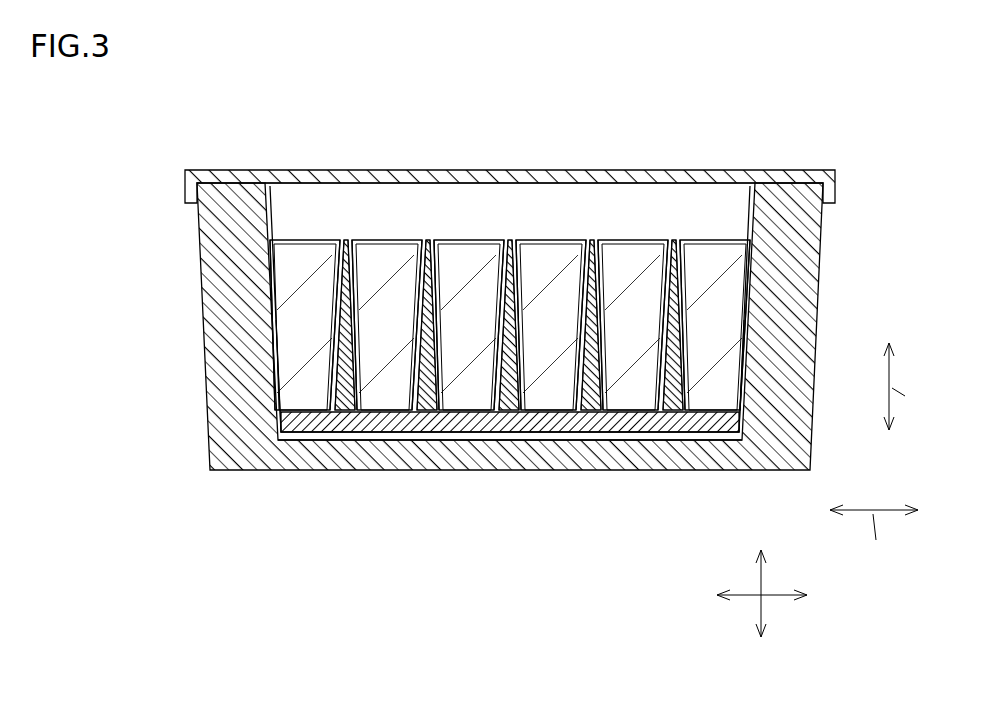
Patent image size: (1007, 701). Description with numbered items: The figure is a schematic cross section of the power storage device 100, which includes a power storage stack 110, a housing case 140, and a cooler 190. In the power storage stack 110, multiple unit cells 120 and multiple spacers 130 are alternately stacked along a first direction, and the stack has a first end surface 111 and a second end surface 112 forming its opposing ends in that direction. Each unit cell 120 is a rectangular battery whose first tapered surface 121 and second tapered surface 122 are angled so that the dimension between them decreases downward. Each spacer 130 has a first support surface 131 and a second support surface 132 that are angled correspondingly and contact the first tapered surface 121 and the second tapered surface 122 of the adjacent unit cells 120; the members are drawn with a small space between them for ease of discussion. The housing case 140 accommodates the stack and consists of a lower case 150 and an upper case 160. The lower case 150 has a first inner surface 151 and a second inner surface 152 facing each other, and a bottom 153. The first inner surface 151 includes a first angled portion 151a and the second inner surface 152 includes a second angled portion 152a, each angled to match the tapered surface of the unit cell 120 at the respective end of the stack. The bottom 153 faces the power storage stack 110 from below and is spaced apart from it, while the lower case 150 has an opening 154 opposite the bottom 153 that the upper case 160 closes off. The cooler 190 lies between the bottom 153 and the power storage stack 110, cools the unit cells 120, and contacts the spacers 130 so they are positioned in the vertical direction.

The power storage device 100 is at (880, 152).
The power storage stack 110 is at (285, 112).
The first end surface 111 is at (750, 288).
The second end surface 112 is at (267, 303).
The unit cell 120 is at (307, 275).
The first tapered surface 121 is at (344, 395).
The second tapered surface 122 is at (350, 398).
The spacer 130 is at (347, 290).
The first support surface 131 is at (342, 300).
The second support surface 132 is at (350, 300).
The housing case 140 is at (127, 172).
The lower case 150 is at (215, 233).
The first inner surface 151 is at (751, 198).
The first angled portion 151a is at (737, 348).
The second inner surface 152 is at (268, 186).
The second angled portion 152a is at (283, 353).
The bottom 153 is at (541, 458).
The opening 154 is at (287, 182).
The upper case 160 is at (187, 186).
The cooler 190 is at (745, 426).